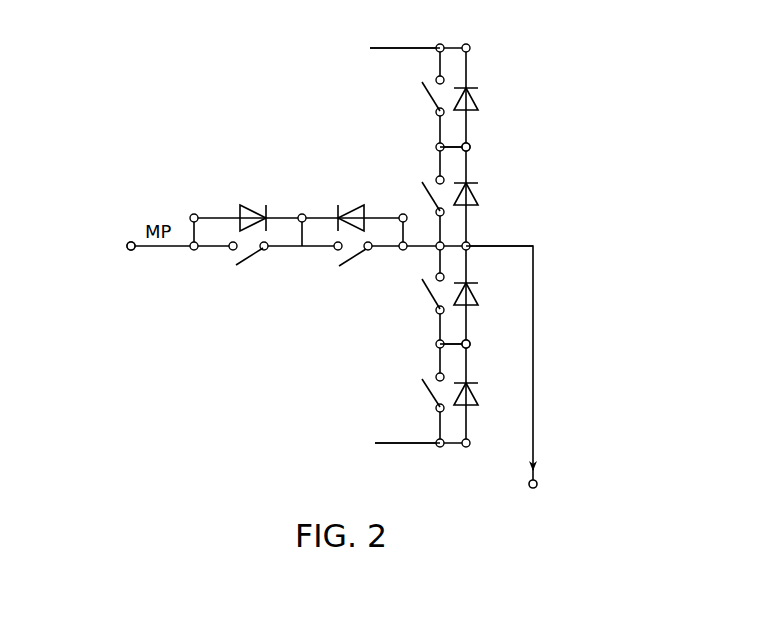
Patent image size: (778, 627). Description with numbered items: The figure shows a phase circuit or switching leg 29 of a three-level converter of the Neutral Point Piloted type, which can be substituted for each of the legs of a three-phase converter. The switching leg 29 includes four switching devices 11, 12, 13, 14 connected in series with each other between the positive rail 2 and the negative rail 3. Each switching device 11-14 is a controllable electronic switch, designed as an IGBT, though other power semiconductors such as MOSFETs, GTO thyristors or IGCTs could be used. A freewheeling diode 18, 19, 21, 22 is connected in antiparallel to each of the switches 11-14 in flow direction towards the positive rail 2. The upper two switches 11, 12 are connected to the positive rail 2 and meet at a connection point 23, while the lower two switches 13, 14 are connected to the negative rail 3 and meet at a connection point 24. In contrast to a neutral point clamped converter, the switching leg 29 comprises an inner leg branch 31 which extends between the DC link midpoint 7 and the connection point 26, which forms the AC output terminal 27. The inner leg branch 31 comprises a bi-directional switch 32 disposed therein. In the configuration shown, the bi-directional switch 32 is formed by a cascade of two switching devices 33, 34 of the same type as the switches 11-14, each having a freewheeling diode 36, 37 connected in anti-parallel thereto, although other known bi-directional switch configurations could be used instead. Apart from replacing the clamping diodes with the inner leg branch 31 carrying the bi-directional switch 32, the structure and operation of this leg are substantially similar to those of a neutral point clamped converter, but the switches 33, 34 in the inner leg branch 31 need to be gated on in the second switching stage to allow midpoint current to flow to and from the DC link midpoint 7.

The positive rail 2 is at (393, 50).
The negative rail 3 is at (398, 441).
The DC link midpoint 7 is at (131, 252).
The switching device 11 is at (428, 101).
The switching device 12 is at (428, 190).
The switching device 13 is at (428, 291).
The switching device 14 is at (423, 385).
The freewheeling diode 18 is at (480, 93).
The freewheeling diode 19 is at (480, 196).
The freewheeling diode 21 is at (480, 298).
The freewheeling diode 22 is at (480, 395).
The connection point 23 is at (472, 147).
The connection point 24 is at (472, 344).
The connection point 26 is at (472, 243).
The AC output terminal 27 is at (538, 484).
The switching leg 29 is at (280, 68).
The inner leg branch 31 is at (86, 174).
The bi-directional switch 32 is at (192, 161).
The switching device 33 is at (237, 268).
The switching device 34 is at (340, 268).
The freewheeling diode 36 is at (258, 204).
The freewheeling diode 37 is at (344, 204).